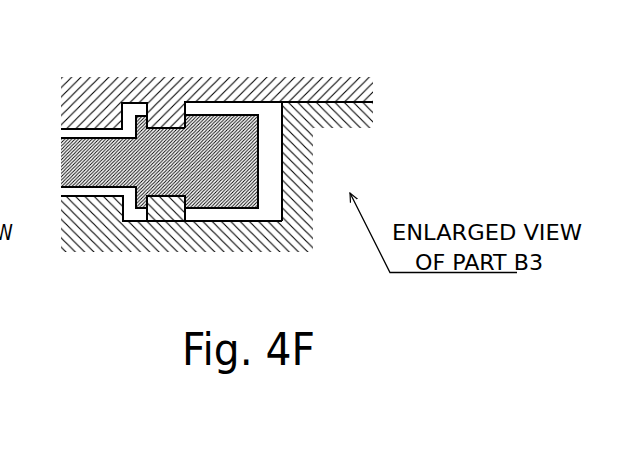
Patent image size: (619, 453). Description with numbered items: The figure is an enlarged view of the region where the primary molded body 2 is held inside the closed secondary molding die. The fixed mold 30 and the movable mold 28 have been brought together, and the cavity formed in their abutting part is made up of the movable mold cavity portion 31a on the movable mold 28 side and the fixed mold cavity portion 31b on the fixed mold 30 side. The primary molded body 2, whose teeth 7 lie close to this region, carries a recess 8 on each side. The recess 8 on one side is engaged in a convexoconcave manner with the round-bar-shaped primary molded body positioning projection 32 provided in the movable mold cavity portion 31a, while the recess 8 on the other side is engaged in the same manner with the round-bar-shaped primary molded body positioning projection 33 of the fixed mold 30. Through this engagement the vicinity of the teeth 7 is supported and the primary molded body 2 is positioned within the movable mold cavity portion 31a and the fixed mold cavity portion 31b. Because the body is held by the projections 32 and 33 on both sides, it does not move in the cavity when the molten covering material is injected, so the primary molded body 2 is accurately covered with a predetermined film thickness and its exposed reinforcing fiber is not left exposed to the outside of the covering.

The primary molded body 2 is at (67, 148).
The teeth 7 is at (243, 200).
The recess 8 is at (163, 127).
The movable mold 28 is at (303, 213).
The fixed mold 30 is at (363, 87).
The movable mold cavity portion 31a is at (276, 108).
The fixed mold cavity portion 31b is at (123, 112).
The primary molded body positioning projection 32 is at (186, 209).
The primary molded body positioning projection 33 is at (187, 109).